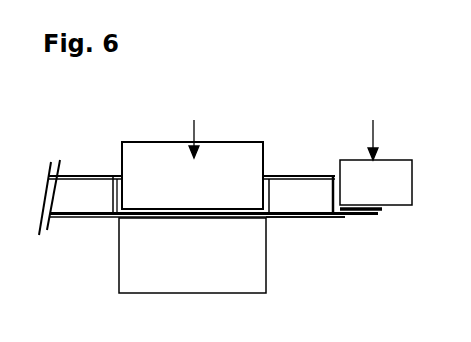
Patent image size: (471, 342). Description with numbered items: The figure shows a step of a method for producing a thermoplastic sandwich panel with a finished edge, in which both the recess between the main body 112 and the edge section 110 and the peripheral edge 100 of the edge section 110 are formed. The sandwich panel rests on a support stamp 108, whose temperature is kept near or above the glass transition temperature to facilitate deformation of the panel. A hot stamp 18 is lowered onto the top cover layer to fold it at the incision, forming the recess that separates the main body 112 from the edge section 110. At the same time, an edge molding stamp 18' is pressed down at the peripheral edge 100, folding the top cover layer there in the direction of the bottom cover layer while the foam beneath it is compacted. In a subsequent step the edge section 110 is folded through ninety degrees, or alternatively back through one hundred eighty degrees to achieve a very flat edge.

The hot molding stamp 18 is at (206, 148).
The edge molding stamp 18' is at (399, 161).
The peripheral edge 100 is at (365, 227).
The support stamp 108 is at (132, 270).
The edge section 110 is at (307, 230).
The main body 112 is at (97, 165).